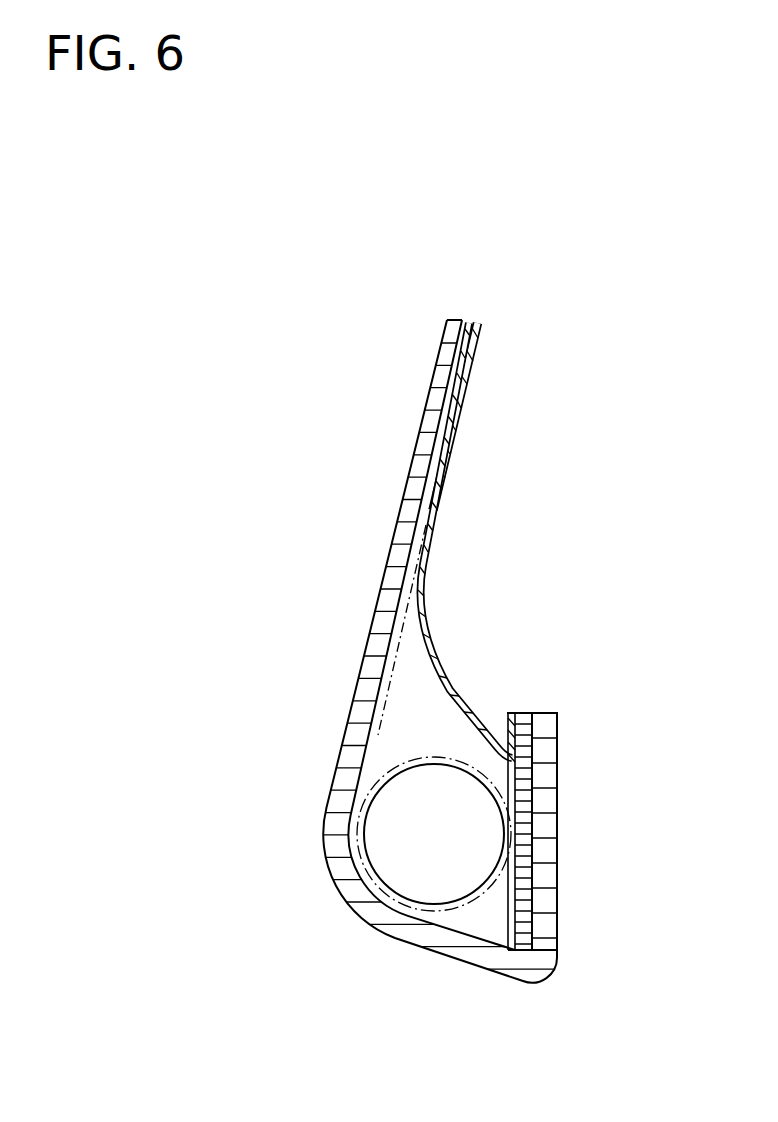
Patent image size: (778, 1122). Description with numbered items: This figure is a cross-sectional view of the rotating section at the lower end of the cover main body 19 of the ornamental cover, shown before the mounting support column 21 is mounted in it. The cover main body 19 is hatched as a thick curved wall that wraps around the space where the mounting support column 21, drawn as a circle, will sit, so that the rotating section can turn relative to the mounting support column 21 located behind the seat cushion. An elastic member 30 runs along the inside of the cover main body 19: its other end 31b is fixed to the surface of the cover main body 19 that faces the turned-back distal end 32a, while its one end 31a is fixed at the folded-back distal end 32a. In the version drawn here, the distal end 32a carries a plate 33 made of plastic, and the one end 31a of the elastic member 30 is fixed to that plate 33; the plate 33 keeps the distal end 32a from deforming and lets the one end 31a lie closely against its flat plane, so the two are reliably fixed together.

The cover main body 19 is at (408, 432).
The mounting support column 21 is at (372, 903).
The elastic member 30 is at (433, 625).
The one end of the elastic member 31a is at (512, 714).
The other end of the elastic member 31b is at (440, 512).
The distal end 32a is at (549, 738).
The plate 33 is at (524, 918).